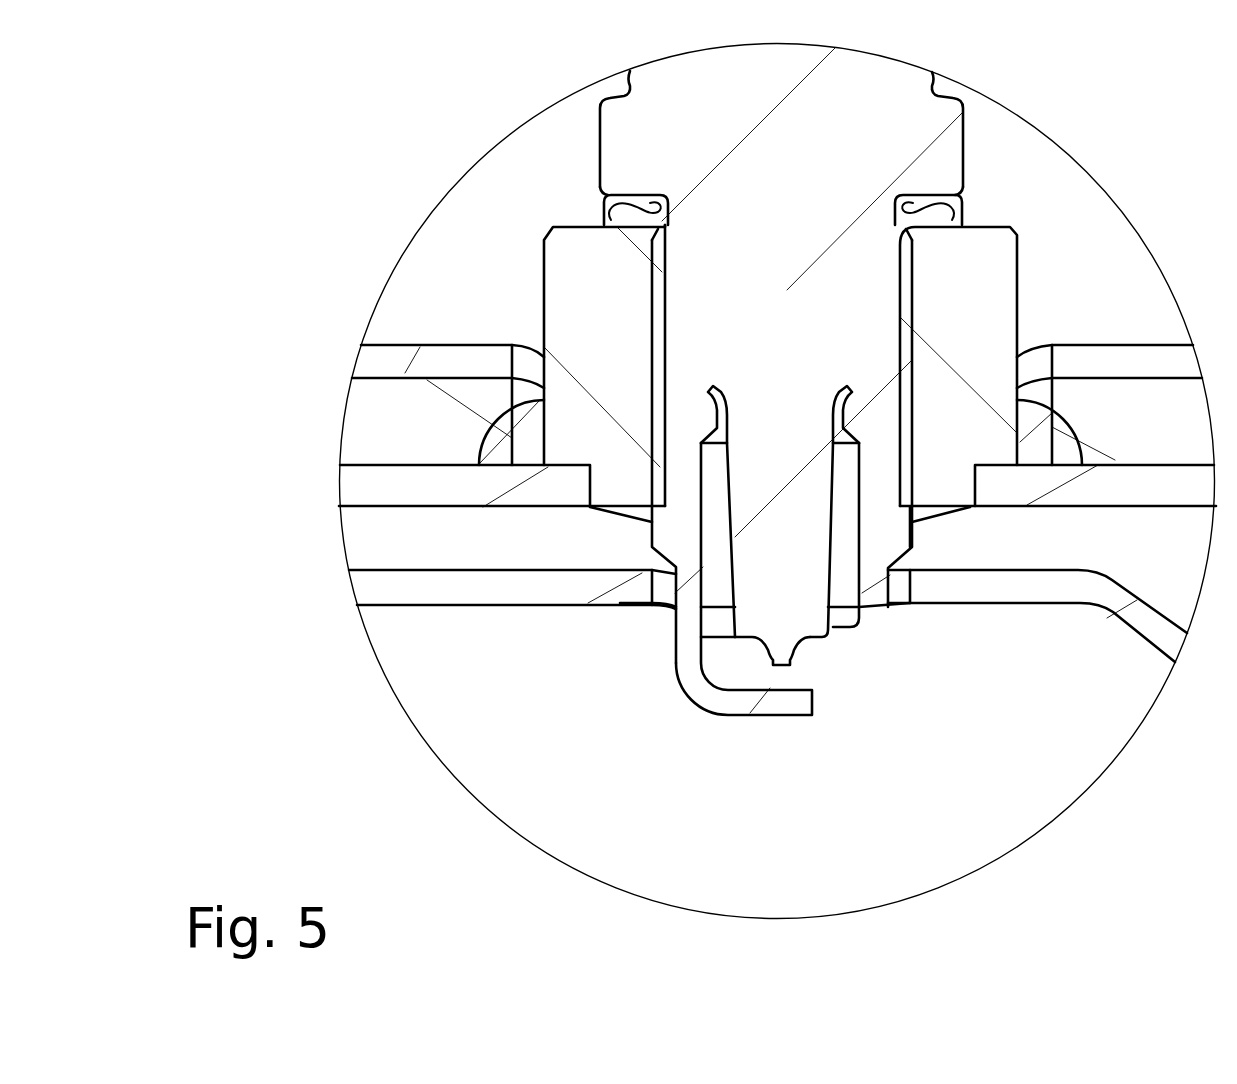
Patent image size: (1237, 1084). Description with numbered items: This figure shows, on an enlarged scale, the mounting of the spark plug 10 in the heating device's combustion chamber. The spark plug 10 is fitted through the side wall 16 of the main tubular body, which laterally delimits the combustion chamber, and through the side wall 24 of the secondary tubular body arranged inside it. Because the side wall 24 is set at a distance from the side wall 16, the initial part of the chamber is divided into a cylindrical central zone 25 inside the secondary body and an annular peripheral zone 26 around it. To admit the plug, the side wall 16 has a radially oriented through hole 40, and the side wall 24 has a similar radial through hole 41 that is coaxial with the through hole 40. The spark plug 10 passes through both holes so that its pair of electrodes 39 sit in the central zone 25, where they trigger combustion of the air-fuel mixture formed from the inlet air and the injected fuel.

The spark plug 10 is at (822, 152).
The side wall 16 is at (402, 422).
The side wall 24 is at (465, 583).
The central zone 25 is at (646, 780).
The peripheral zone 26 is at (406, 540).
The electrodes 39 is at (808, 752).
The through hole 40 is at (1033, 345).
The through hole 41 is at (897, 616).